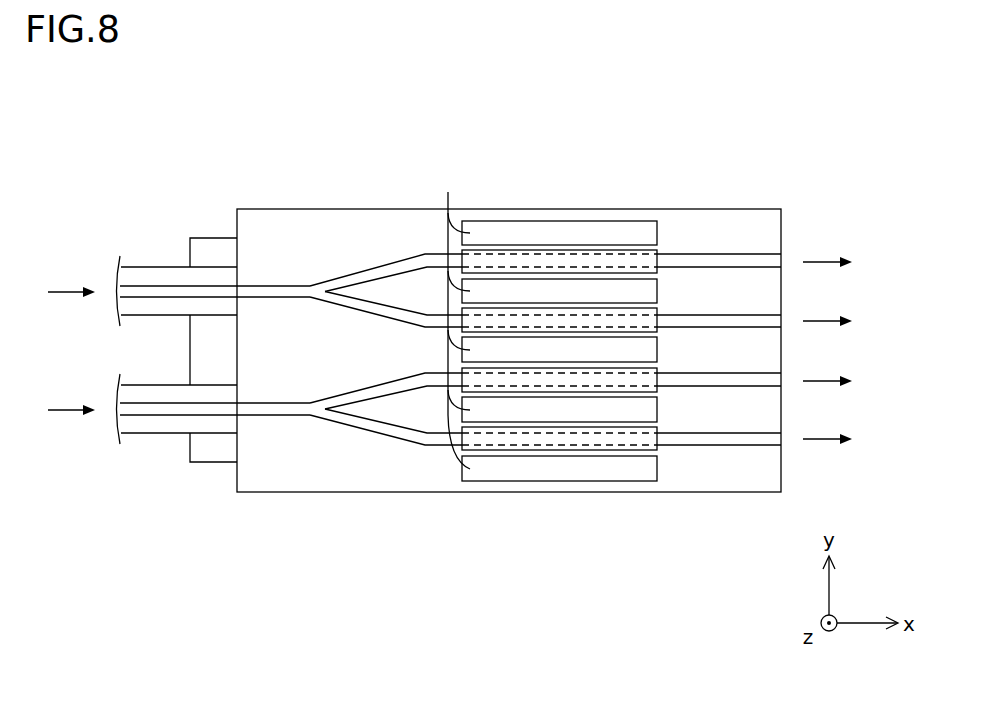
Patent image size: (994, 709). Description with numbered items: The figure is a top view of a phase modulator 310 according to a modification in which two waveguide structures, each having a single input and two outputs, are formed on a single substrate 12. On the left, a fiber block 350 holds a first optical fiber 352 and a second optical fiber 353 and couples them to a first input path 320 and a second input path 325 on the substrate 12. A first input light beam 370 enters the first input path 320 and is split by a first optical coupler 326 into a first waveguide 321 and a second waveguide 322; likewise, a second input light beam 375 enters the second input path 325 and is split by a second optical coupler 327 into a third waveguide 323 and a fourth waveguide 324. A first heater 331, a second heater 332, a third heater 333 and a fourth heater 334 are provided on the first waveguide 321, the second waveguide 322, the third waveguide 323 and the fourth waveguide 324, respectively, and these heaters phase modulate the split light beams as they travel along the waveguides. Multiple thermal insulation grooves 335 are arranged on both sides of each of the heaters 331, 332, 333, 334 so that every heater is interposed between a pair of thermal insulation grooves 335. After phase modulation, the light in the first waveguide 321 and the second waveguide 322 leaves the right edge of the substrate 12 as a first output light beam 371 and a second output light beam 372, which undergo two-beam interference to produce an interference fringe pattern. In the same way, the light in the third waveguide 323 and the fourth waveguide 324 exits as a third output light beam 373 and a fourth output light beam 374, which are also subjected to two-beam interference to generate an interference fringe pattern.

The substrate 12 is at (288, 208).
The phase modulator 310 is at (702, 140).
The first input path 320 is at (273, 287).
The first waveguide 321 is at (754, 262).
The second waveguide 322 is at (754, 322).
The third waveguide 323 is at (754, 382).
The fourth waveguide 324 is at (754, 441).
The second input path 325 is at (273, 405).
The first optical coupler 326 is at (353, 265).
The second optical coupler 327 is at (353, 383).
The first heater 331 is at (654, 262).
The second heater 332 is at (654, 321).
The third heater 333 is at (654, 381).
The fourth heater 334 is at (654, 439).
The thermal insulation grooves 335 is at (542, 322).
The fiber block 350 is at (215, 248).
The first optical fiber 352 is at (151, 272).
The second optical fiber 353 is at (151, 390).
The first input light beam 370 is at (66, 286).
The first output light beam 371 is at (822, 260).
The second output light beam 372 is at (822, 320).
The third output light beam 373 is at (822, 380).
The fourth output light beam 374 is at (822, 439).
The second input light beam 375 is at (66, 402).